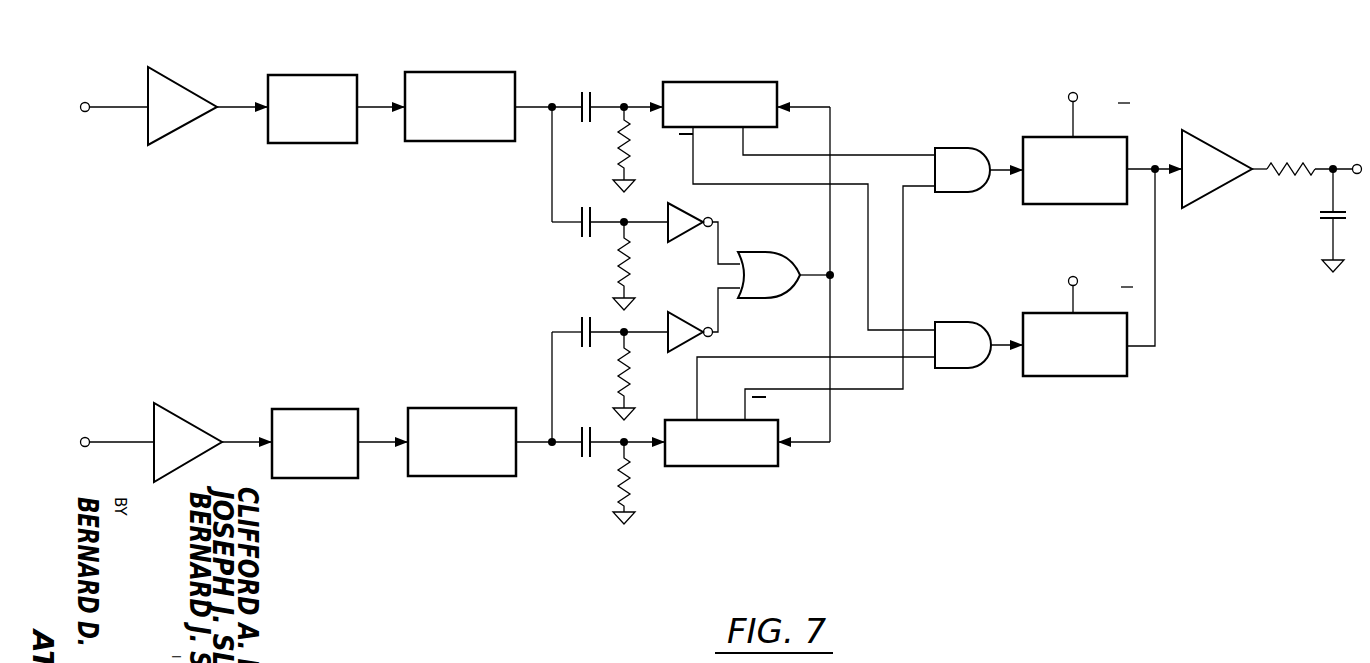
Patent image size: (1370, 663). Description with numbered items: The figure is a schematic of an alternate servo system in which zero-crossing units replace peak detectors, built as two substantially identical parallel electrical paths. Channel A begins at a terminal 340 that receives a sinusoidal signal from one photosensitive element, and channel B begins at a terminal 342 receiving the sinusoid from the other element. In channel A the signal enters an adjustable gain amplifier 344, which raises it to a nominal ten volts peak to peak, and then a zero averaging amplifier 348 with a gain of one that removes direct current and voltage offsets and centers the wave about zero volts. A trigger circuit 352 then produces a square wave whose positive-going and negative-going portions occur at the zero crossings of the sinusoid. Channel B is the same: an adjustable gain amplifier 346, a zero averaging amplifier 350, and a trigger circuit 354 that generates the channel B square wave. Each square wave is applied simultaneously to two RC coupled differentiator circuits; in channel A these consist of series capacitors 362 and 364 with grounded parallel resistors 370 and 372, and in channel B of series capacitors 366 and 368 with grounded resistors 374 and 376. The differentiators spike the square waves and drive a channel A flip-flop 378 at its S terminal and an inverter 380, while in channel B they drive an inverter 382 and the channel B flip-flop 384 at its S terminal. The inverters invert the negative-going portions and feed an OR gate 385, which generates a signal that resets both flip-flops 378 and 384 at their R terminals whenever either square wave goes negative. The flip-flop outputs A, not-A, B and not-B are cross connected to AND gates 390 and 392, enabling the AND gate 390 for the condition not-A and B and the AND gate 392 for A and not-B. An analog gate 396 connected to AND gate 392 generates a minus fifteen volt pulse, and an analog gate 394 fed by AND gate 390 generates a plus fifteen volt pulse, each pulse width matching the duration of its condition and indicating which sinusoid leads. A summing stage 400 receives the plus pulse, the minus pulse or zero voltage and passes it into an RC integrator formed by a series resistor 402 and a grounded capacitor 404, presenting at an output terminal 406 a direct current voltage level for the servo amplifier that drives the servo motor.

The terminal 340 is at (85, 437).
The terminal 342 is at (86, 112).
The adjustable gain amplifier 344 is at (200, 428).
The adjustable gain amplifier 346 is at (166, 78).
The zero averaging amplifier 348 is at (340, 409).
The zero averaging amplifier 350 is at (345, 75).
The trigger circuit 352 is at (488, 476).
The trigger circuit 354 is at (490, 72).
The capacitor 362 is at (592, 452).
The capacitor 364 is at (580, 328).
The capacitor 366 is at (578, 230).
The capacitor 368 is at (588, 92).
The resistor 370 is at (632, 500).
The resistor 372 is at (620, 375).
The resistor 374 is at (618, 265).
The resistor 376 is at (620, 160).
The channel A flip-flop 378 is at (745, 466).
The inverter 380 is at (683, 322).
The inverter 382 is at (702, 214).
The channel B flip-flop 384 is at (731, 82).
The OR gate 385 is at (778, 298).
The AND gate 390 is at (943, 368).
The AND gate 392 is at (963, 148).
The switch circuit (+15V) 394 is at (1118, 376).
The analog gate 396 is at (1108, 204).
The summing stage 400 is at (1214, 190).
The resistor 402 is at (1300, 160).
The capacitor 404 is at (1325, 222).
The output terminal 406 is at (1355, 162).